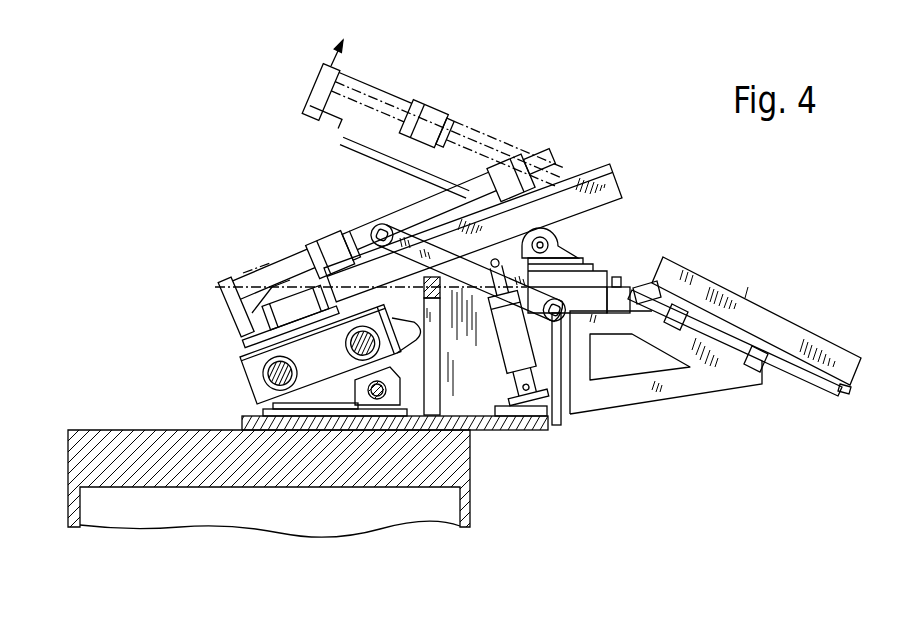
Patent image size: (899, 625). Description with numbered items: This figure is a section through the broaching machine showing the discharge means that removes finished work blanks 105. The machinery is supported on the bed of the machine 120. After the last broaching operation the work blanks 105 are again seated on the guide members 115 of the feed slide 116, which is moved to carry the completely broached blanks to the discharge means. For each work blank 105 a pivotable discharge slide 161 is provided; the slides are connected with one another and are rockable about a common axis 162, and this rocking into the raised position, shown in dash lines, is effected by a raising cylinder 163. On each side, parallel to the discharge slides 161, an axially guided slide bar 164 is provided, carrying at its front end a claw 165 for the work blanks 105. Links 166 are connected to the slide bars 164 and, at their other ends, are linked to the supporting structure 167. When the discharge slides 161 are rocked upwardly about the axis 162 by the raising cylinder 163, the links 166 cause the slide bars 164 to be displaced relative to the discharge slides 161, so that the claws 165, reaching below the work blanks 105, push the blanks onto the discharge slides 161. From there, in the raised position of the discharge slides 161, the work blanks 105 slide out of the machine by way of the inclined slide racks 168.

The work blank 105 is at (257, 275).
The guide member 115 is at (305, 327).
The feed slide 116 is at (312, 372).
The bed of the machine 120 is at (468, 507).
The discharge slide 161 is at (613, 183).
The common axis 162 is at (548, 243).
The raising cylinder 163 is at (508, 377).
The slide bar 164 is at (291, 262).
The claw 165 is at (242, 337).
The link 166 is at (413, 228).
The supporting structure 167 is at (563, 392).
The inclined slide rack 168 is at (766, 318).